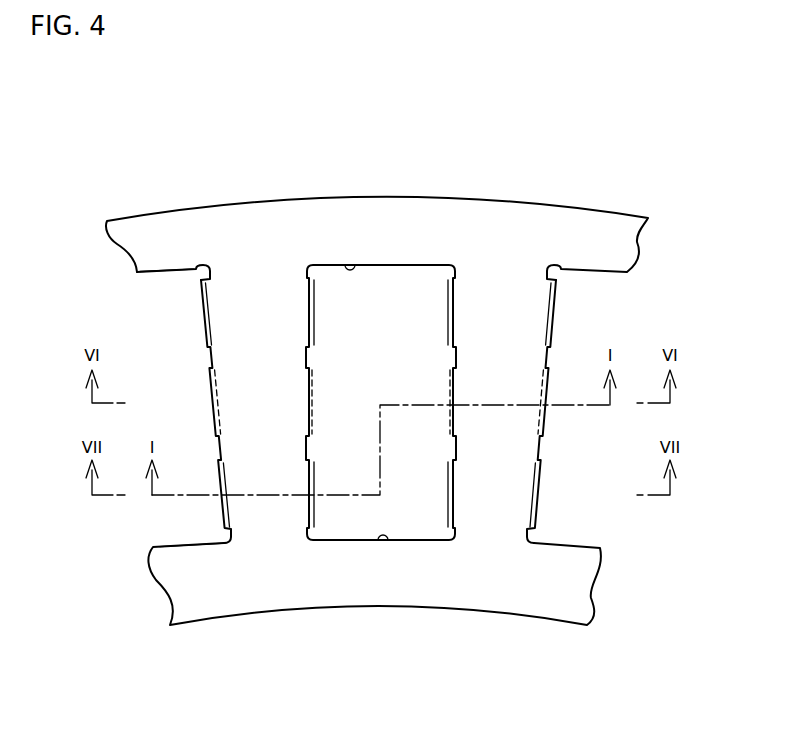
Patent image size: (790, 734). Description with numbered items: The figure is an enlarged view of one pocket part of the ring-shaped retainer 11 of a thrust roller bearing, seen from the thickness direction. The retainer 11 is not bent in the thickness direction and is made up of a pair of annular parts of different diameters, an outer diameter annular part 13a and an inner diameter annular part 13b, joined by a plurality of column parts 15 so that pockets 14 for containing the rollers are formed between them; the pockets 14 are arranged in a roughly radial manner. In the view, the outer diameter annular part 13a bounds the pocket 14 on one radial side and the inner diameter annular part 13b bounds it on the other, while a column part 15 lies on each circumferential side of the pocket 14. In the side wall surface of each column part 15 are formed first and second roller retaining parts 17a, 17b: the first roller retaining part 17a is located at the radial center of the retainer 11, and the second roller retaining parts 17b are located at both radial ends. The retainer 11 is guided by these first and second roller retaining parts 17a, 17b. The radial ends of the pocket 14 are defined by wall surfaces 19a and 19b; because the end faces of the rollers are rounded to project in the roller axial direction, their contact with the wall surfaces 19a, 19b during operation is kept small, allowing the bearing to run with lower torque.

The retainer 11 is at (510, 145).
The outer diameter annular part 13a is at (373, 218).
The inner diameter annular part 13b is at (458, 588).
The pocket 14 is at (398, 282).
The column part 15 is at (267, 447).
The first roller retaining part 17a is at (312, 410).
The second roller retaining part 17b is at (313, 303).
The wall surface of the pocket 19a is at (343, 266).
The wall surface of the pocket 19b is at (376, 541).